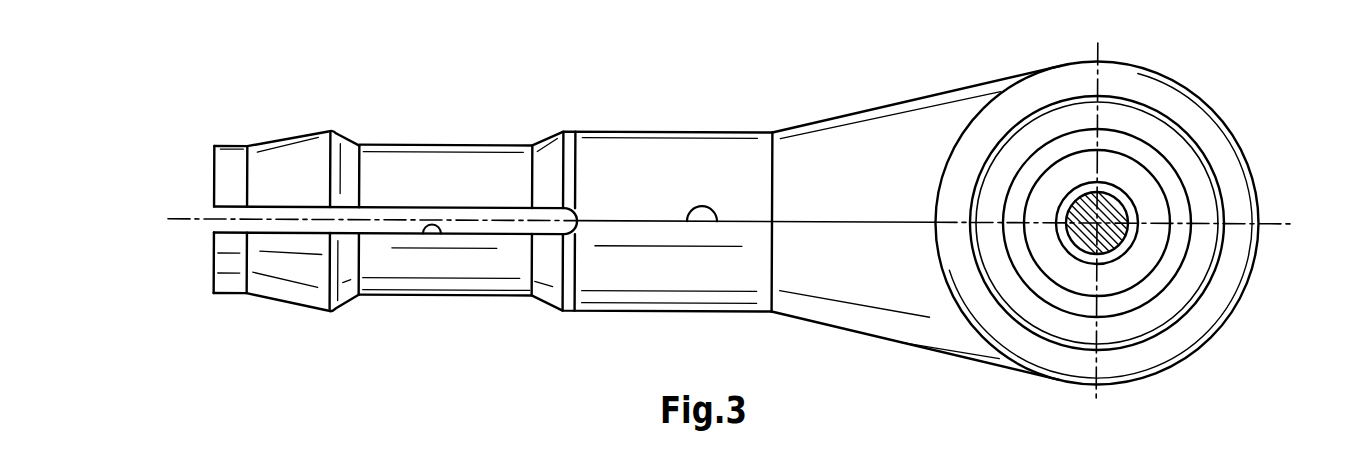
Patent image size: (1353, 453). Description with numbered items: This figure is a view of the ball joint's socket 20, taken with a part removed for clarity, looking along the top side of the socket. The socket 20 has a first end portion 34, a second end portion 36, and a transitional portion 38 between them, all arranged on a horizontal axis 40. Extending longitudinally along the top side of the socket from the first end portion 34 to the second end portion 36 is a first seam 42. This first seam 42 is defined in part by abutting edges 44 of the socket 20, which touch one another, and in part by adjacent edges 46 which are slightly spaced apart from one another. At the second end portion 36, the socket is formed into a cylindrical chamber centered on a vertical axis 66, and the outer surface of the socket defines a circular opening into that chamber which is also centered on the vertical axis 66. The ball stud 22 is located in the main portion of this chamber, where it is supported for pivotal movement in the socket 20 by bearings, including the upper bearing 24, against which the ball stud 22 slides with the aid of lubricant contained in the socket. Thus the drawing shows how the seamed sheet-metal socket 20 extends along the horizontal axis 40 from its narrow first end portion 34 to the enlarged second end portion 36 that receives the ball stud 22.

The socket 20 is at (443, 121).
The ball stud 22 is at (1152, 175).
The upper bearing 24 is at (1127, 102).
The first end portion 34 is at (312, 137).
The second end portion 36 is at (1255, 187).
The transitional portion 38 is at (812, 122).
The horizontal axis 40 is at (203, 220).
The first seam 42 is at (594, 220).
The abutting edges 44 is at (717, 222).
The adjacent edges 46 is at (480, 208).
The vertical axis 66 is at (1120, 243).